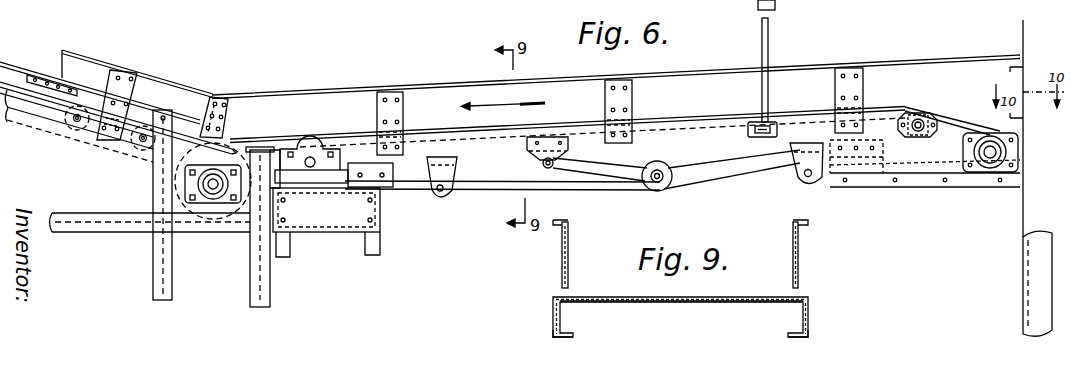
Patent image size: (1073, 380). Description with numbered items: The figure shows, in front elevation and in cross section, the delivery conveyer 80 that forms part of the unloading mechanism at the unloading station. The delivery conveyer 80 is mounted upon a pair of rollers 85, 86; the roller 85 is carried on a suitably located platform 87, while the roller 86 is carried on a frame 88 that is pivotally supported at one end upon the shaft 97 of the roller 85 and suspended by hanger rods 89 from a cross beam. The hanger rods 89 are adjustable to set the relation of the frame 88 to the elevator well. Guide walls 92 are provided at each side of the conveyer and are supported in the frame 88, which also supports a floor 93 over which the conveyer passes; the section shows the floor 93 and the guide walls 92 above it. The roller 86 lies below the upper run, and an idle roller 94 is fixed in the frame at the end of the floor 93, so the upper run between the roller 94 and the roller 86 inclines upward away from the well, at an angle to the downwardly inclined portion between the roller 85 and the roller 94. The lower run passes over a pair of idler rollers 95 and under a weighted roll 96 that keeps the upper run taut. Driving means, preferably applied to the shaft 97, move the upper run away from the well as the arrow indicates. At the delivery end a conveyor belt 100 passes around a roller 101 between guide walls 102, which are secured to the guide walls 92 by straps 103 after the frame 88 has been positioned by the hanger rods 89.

In FIG. 6, the delivery conveyer 80 is at (798, 113).
In FIG. 9, the delivery conveyer 80 is at (607, 297).
In FIG. 6, the roller 85 is at (320, 144).
In FIG. 6, the roller 86 is at (993, 131).
In FIG. 6, the platform 87 is at (342, 222).
In FIG. 6, the frame 88 is at (497, 147).
In FIG. 9, the frame 88 is at (553, 335).
In FIG. 6, the hanger rods 89 is at (769, 48).
In FIG. 6, the guide walls 92 is at (616, 105).
In FIG. 9, the guide walls 92 is at (798, 257).
In FIG. 9, the floor 93 is at (645, 302).
In FIG. 6, the idle roller 94 is at (925, 113).
In FIG. 6, the idler rollers 95 is at (440, 201).
In FIG. 6, the weighted roll 96 is at (672, 168).
In FIG. 6, the shaft 97 is at (306, 159).
In FIG. 6, the conveyor belt 100 is at (50, 102).
In FIG. 6, the roller 101 is at (213, 210).
In FIG. 6, the guide walls 102 is at (172, 95).
In FIG. 6, the straps 103 is at (230, 107).